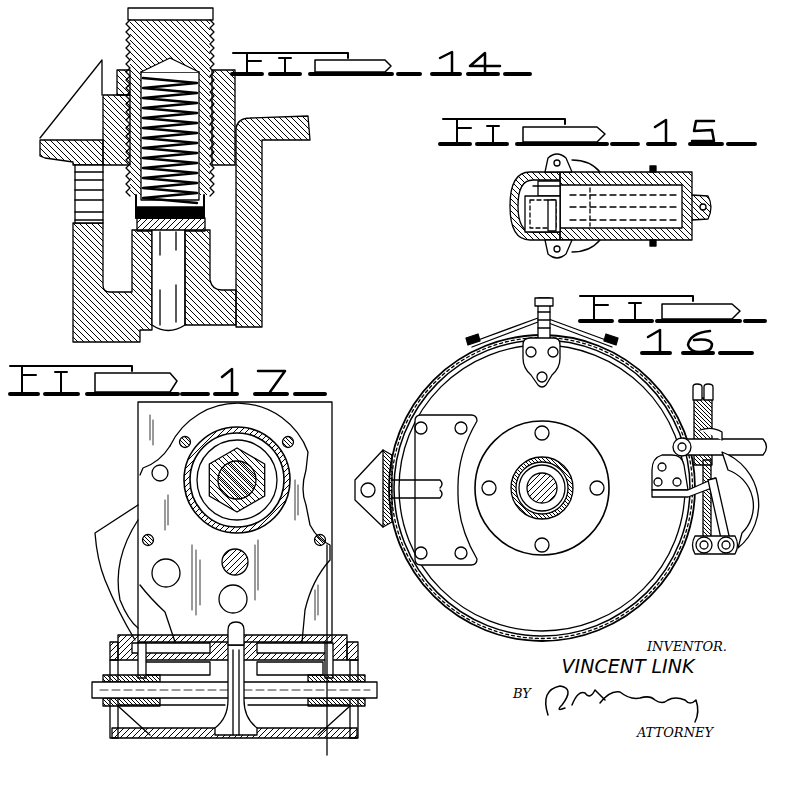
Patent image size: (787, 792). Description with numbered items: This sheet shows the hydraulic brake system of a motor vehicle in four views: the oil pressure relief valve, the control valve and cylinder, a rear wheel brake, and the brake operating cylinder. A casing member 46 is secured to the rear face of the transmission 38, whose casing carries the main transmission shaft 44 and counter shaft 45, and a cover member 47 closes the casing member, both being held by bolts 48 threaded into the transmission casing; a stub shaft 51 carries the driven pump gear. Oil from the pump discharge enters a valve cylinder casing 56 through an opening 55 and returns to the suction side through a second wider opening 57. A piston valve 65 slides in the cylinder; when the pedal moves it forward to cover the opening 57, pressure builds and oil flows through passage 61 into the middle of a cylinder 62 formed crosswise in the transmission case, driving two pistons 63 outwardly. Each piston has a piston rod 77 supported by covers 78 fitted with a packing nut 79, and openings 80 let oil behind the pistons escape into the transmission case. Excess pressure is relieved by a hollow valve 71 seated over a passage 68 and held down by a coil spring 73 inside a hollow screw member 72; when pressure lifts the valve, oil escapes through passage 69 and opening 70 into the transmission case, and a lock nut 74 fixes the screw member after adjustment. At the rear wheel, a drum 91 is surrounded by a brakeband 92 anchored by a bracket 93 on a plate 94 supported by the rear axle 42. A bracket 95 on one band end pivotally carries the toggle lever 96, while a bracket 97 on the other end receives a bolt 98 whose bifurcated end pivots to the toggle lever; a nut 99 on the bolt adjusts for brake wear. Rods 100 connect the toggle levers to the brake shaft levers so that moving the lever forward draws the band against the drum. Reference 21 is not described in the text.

In FIG. 16, the section line 21 is at (336, 560).
In FIG. 17, the section line 21 is at (327, 560).
In FIG. 14, the transmission 38 is at (73, 267).
In FIG. 17, the transmission 38 is at (138, 456).
In FIG. 16, the rear axle 42 is at (565, 506).
In FIG. 17, the main transmission shaft 44 is at (240, 472).
In FIG. 17, the counter shaft 45 is at (236, 600).
In FIG. 14, the casing member 46 is at (236, 288).
In FIG. 14, the cover member 47 is at (262, 243).
In FIG. 17, the bolts 48 is at (290, 441).
In FIG. 17, the stub shaft 51 is at (250, 563).
In FIG. 15, the opening 55 is at (540, 185).
In FIG. 15, the valve cylinder casing 56 is at (520, 215).
In FIG. 15, the second wider opening 57 is at (548, 238).
In FIG. 17, the passage 61 is at (246, 628).
In FIG. 17, the cylinder 62 is at (188, 738).
In FIG. 17, the pistons 63 is at (232, 736).
In FIG. 15, the piston valve 65 is at (694, 228).
In FIG. 14, the passage 68 is at (168, 280).
In FIG. 14, the longitudinally extending passage 69 is at (240, 202).
In FIG. 14, the opening 70 is at (78, 196).
In FIG. 17, the opening 70 is at (152, 474).
In FIG. 14, the hollow valve 71 is at (137, 211).
In FIG. 14, the hollow screw member 72 is at (130, 25).
In FIG. 14, the coil spring 73 is at (204, 200).
In FIG. 14, the lock nut 74 is at (118, 80).
In FIG. 17, the piston rod 77 is at (92, 690).
In FIG. 17, the covers 78 is at (114, 716).
In FIG. 17, the packing nut 79 is at (110, 674).
In FIG. 17, the openings 80 is at (318, 669).
In FIG. 16, the drum 91 is at (442, 375).
In FIG. 16, the brakeband 92 is at (424, 388).
In FIG. 16, the bracket 93 is at (473, 422).
In FIG. 16, the plate 94 is at (542, 488).
In FIG. 16, the bracket 95 is at (703, 554).
In FIG. 16, the toggle lever 96 is at (752, 549).
In FIG. 16, the bracket 97 is at (717, 432).
In FIG. 16, the bolt 98 is at (713, 518).
In FIG. 16, the nut 99 is at (693, 405).
In FIG. 16, the rods 100 is at (753, 440).